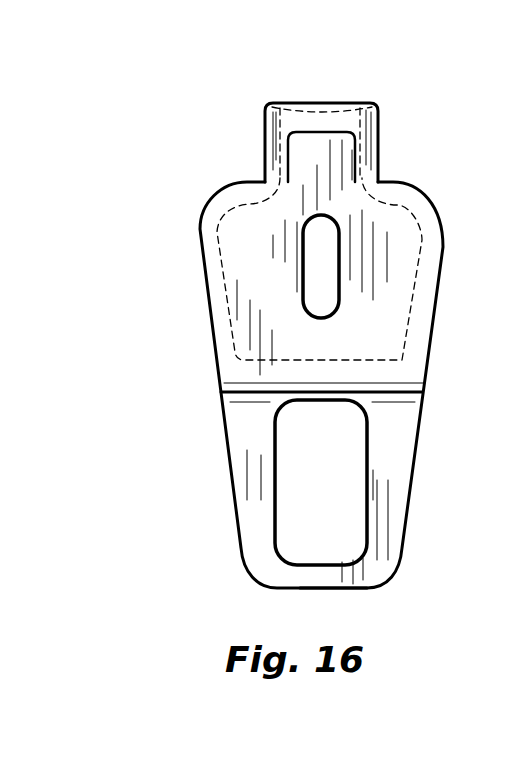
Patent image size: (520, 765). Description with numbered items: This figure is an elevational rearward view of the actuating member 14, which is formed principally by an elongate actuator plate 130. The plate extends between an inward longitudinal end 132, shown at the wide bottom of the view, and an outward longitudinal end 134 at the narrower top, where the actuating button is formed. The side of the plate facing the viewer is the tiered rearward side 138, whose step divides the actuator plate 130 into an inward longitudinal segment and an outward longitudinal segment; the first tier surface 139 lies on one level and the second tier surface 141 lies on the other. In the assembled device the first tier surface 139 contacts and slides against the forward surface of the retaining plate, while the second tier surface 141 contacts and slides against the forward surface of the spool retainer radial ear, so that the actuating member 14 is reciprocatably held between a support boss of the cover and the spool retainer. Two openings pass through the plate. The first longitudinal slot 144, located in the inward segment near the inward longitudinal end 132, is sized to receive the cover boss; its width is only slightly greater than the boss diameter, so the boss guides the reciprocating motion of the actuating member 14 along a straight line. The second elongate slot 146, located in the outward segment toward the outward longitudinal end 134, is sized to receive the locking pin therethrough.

The actuating member 14 is at (322, 330).
The actuator plate 130 is at (388, 451).
The inward longitudinal end 132 is at (357, 588).
The outward longitudinal end 134 is at (337, 152).
The tiered rearward side 138 is at (219, 371).
The first tier surface 139 is at (249, 460).
The second tier surface 141 is at (400, 222).
The first longitudinal slot 144 is at (277, 484).
The second elongate slot 146 is at (305, 263).